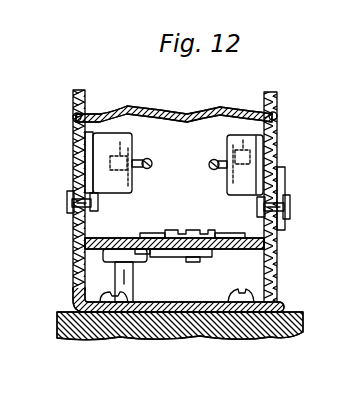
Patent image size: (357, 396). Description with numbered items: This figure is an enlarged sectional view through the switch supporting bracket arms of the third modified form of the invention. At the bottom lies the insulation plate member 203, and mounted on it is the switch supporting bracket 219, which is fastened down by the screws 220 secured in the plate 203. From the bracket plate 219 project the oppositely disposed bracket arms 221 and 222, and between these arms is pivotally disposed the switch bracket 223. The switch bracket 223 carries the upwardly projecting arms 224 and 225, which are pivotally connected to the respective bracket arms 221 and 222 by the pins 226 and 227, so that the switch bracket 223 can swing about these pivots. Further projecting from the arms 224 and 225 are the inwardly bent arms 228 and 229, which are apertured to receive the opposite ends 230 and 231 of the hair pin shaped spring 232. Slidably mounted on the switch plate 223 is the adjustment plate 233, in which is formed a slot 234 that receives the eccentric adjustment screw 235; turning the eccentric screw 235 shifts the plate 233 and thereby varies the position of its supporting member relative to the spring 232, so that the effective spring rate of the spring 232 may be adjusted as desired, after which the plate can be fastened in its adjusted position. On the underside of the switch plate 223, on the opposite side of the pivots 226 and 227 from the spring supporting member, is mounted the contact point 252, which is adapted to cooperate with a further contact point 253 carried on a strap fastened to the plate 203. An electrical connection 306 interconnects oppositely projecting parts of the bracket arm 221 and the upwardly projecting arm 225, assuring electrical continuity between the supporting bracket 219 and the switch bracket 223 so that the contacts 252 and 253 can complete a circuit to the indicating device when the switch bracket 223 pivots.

The insulation plate member 203 is at (226, 333).
The switch supporting bracket 219 is at (138, 336).
The screws 220 is at (238, 289).
The bracket arm 221 is at (73, 268).
The bracket arm 222 is at (281, 273).
The switch bracket 223 is at (115, 238).
The upwardly projecting arm 224 is at (77, 150).
The upwardly projecting arm 225 is at (280, 156).
The pin 226 is at (68, 203).
The pin 227 is at (289, 203).
The inwardly bent arm 228 is at (110, 143).
The inwardly bent arm 229 is at (233, 188).
The spring end 230 is at (132, 139).
The spring end 231 is at (247, 112).
The hair pin shaped spring 232 is at (213, 161).
The adjustment plate 233 is at (226, 235).
The slot 234 is at (216, 235).
The eccentric adjustment screw 235 is at (178, 230).
The contact point 252 is at (146, 260).
The contact point 253 is at (128, 279).
The electrical connection 306 is at (196, 112).